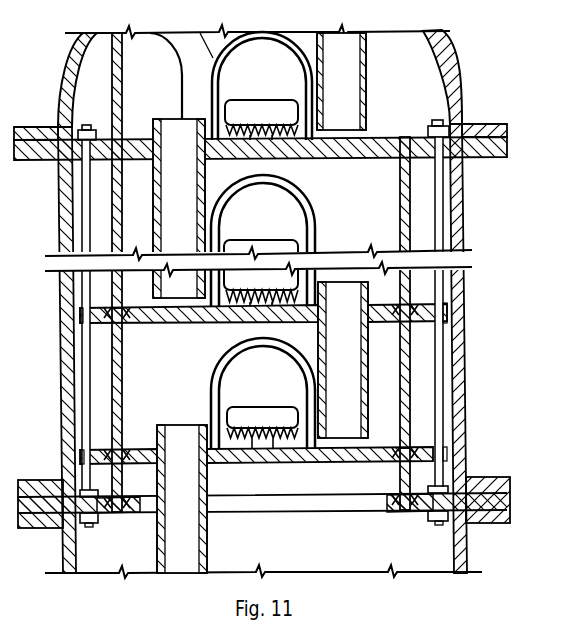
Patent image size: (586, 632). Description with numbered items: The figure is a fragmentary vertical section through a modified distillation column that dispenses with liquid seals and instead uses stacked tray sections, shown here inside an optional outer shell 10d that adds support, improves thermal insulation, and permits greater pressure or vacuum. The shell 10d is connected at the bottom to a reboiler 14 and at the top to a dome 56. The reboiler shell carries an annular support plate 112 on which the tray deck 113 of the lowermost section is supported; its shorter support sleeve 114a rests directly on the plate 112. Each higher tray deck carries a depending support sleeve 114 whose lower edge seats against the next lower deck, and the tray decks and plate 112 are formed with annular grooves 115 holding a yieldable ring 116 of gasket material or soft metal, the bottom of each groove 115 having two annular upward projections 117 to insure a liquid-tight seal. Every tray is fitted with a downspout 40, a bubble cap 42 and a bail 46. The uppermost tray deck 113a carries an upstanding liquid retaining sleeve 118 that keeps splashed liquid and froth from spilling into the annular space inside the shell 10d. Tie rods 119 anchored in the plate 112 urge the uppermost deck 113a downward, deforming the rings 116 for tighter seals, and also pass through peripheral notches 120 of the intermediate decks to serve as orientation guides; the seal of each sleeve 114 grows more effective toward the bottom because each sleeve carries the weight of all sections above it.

The liquid retaining sleeve 118 is at (122, 88).
The dome 56 is at (460, 78).
The uppermost tray deck 113a is at (336, 157).
The support sleeve 114 is at (400, 212).
The tie rod 119 is at (438, 213).
The notch 120 is at (448, 310).
The yieldable ring 116 is at (121, 314).
The annular groove 115 is at (126, 326).
The bail 46 is at (228, 362).
The bubble cap 42 is at (248, 408).
The downspout 40 is at (366, 363).
The outer shell 10d is at (462, 365).
The tray deck 113 is at (334, 457).
The support sleeve of the lowermost section 114a is at (407, 483).
The annular support plate 112 is at (425, 510).
The annular upward projection 117 is at (113, 513).
The reboiler 14 is at (466, 543).